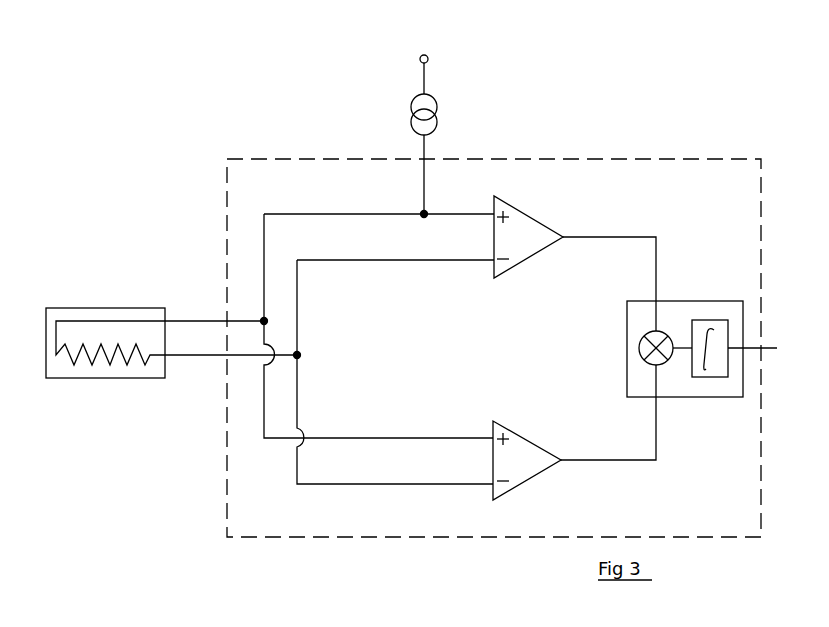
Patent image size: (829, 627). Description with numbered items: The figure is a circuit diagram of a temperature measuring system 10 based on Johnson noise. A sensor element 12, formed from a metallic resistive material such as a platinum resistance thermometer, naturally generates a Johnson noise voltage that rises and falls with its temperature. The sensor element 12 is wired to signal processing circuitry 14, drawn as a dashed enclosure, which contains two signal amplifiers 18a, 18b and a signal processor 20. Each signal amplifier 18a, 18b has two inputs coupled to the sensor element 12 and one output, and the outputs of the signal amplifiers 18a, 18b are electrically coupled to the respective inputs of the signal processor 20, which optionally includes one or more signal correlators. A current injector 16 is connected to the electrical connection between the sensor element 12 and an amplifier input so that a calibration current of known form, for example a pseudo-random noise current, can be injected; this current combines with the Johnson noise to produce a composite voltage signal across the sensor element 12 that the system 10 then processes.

The temperature measuring system 10 is at (652, 69).
The sensor element 12 is at (171, 328).
The signal processing circuitry 14 is at (494, 331).
The current injector 16 is at (450, 136).
The signal amplifier 18a is at (575, 245).
The signal amplifier 18b is at (574, 448).
The signal processor 20 is at (702, 333).